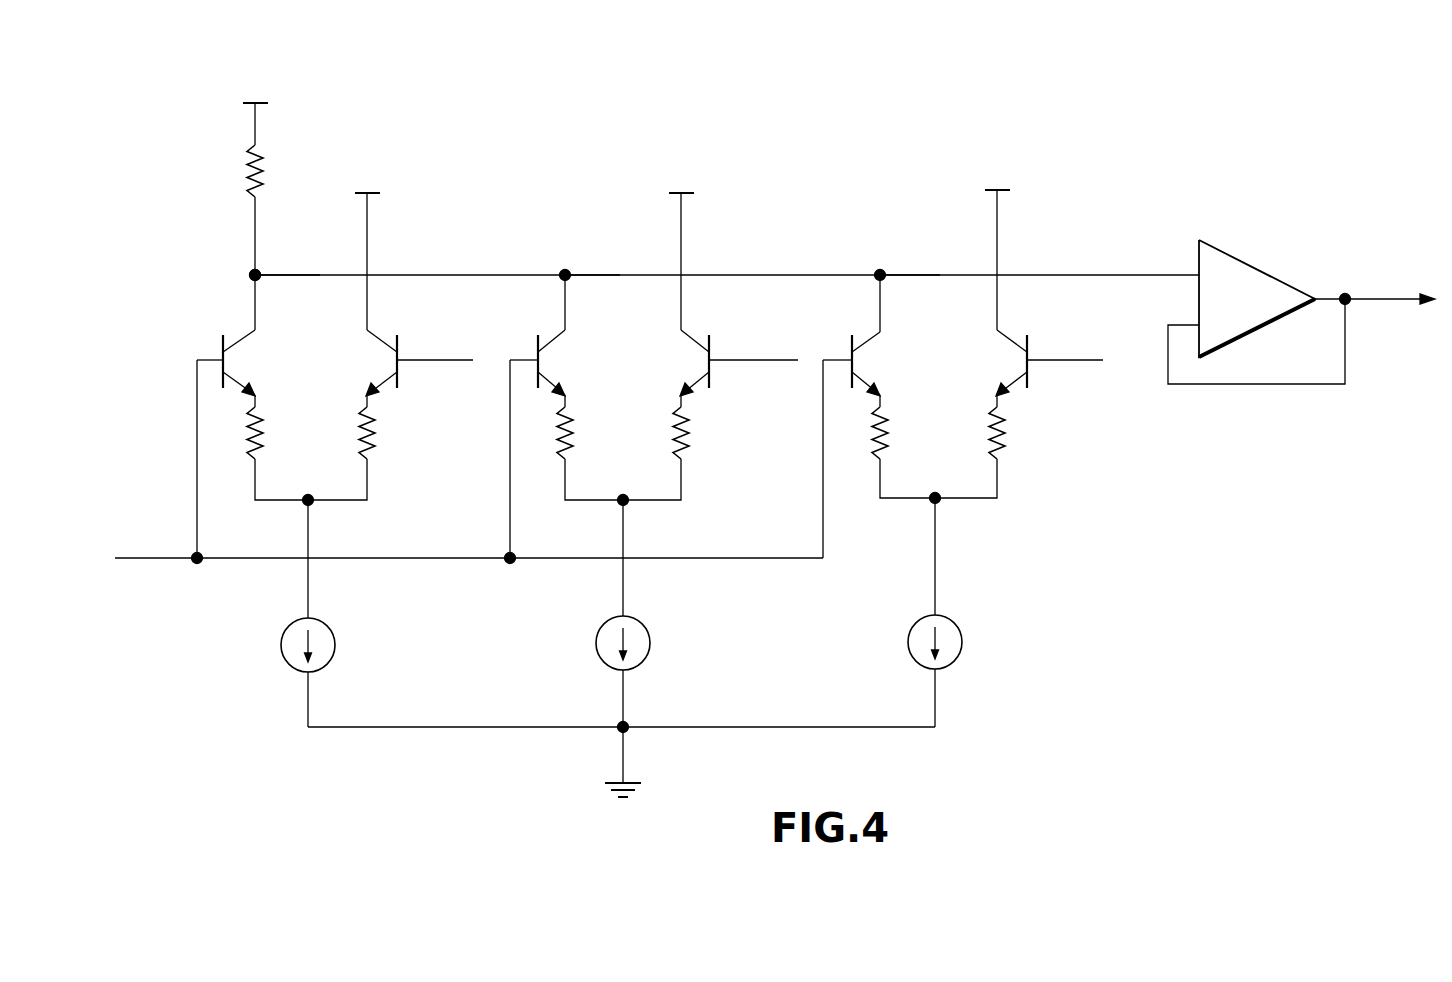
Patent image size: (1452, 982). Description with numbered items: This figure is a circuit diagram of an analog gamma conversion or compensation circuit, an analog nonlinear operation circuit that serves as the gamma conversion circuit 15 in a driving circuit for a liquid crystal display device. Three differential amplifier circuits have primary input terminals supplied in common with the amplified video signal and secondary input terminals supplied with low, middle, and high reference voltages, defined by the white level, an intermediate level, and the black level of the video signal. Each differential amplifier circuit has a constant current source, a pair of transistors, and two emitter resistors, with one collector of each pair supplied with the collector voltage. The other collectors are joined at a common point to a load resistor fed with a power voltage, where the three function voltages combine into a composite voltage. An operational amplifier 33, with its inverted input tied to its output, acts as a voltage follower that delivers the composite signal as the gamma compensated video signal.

The gamma conversion circuit 15 is at (1180, 664).
The operational amplifier 33 is at (1306, 245).